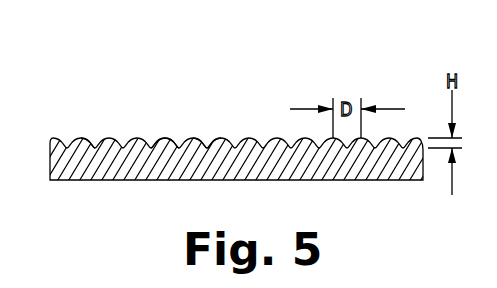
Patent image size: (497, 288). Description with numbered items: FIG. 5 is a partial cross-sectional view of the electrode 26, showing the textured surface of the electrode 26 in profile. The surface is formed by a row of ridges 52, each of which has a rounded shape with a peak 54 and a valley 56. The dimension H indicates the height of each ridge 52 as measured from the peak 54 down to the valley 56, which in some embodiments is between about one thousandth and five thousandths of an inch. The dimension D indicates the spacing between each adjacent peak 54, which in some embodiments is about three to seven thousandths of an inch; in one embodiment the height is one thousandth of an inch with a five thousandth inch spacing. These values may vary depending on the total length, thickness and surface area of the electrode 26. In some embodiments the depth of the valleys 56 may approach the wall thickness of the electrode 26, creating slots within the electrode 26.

The electrode 26 is at (291, 66).
The ridge 52 is at (90, 138).
The peak 54 is at (165, 138).
The valley 56 is at (212, 146).